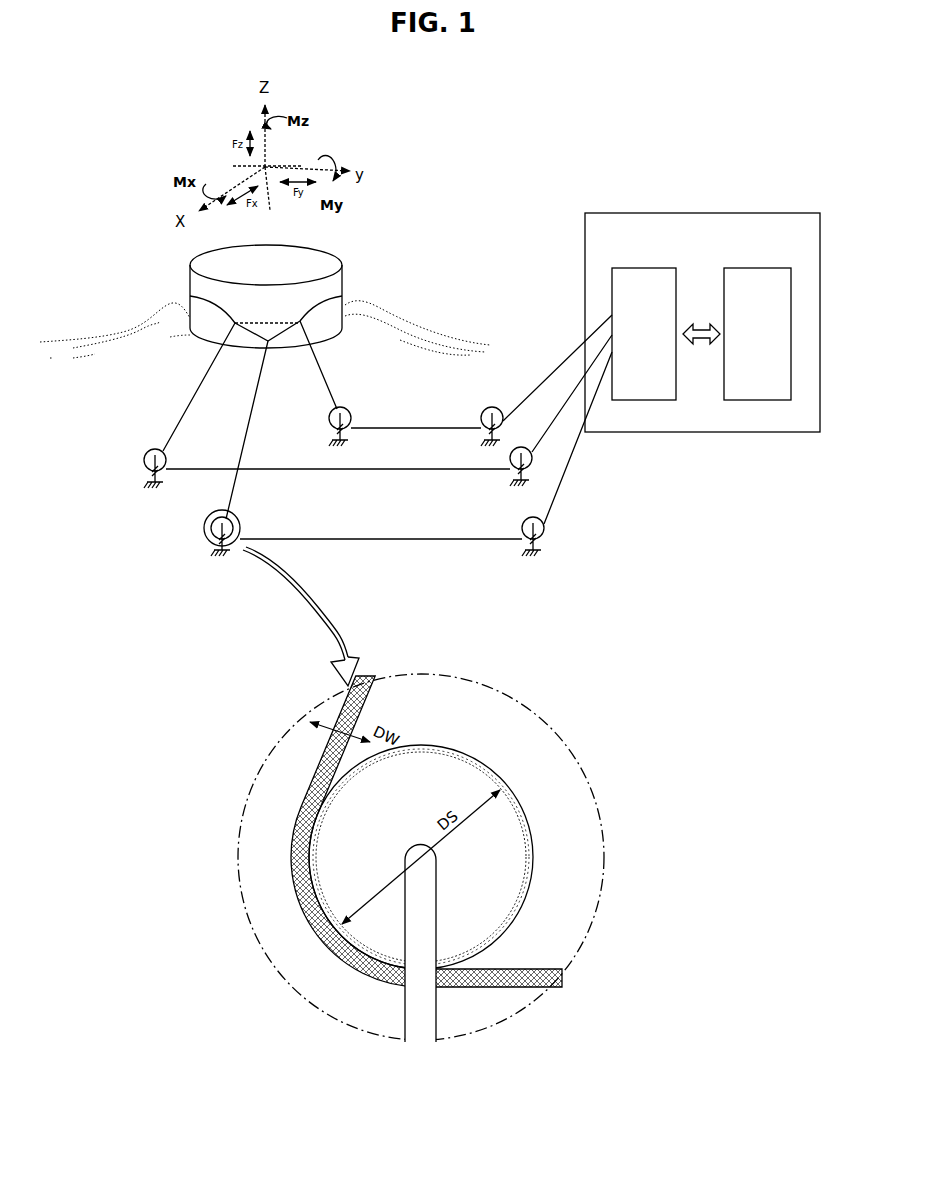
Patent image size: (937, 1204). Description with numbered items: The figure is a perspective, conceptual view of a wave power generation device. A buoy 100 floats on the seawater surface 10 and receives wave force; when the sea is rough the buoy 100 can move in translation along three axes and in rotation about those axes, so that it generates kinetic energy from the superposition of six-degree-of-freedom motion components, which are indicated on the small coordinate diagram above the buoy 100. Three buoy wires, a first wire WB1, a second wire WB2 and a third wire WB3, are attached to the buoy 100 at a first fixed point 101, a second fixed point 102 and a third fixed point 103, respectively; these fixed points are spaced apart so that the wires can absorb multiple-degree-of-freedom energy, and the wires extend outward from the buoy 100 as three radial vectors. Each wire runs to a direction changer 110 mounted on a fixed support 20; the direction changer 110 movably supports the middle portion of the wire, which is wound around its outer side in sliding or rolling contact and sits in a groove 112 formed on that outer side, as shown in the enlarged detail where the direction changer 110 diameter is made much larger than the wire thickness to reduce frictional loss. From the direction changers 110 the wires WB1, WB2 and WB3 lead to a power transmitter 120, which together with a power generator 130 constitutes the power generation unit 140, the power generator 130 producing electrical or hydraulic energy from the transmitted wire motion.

The water surface 10 is at (393, 318).
The fixed ground support 20 is at (148, 480).
The buoy 100 is at (343, 258).
The first fixed point 101 is at (268, 345).
The second fixed point 102 is at (190, 298).
The third fixed point 103 is at (342, 302).
The direction changer 110 is at (345, 410).
The groove 112 is at (533, 840).
The power transmitter 120 is at (655, 268).
The power generator 130 is at (772, 268).
The power generation unit 140 is at (767, 213).
The first wire WB1 is at (405, 540).
The second wire WB2 is at (410, 470).
The third wire WB3 is at (405, 428).